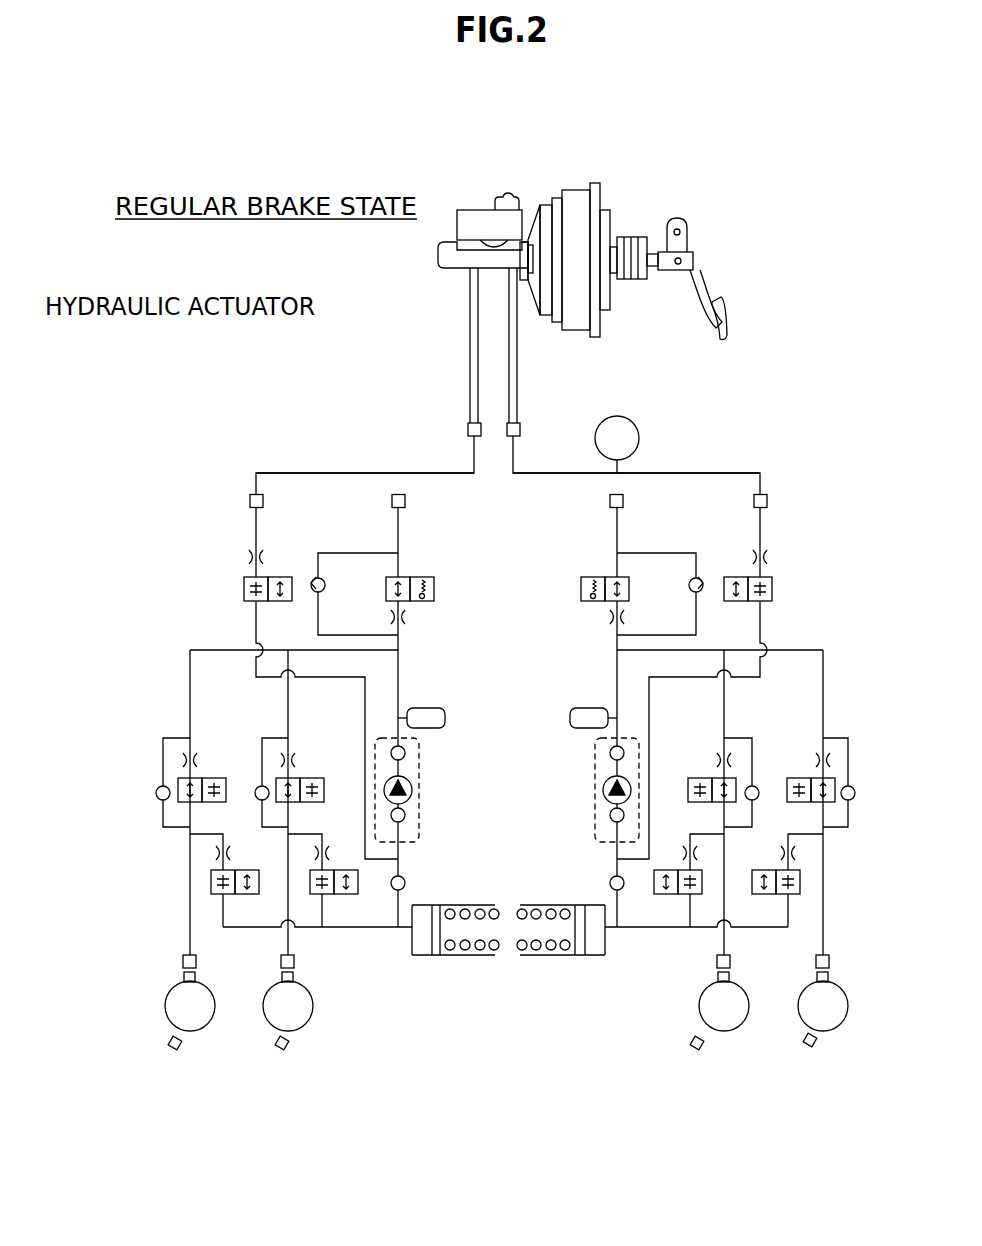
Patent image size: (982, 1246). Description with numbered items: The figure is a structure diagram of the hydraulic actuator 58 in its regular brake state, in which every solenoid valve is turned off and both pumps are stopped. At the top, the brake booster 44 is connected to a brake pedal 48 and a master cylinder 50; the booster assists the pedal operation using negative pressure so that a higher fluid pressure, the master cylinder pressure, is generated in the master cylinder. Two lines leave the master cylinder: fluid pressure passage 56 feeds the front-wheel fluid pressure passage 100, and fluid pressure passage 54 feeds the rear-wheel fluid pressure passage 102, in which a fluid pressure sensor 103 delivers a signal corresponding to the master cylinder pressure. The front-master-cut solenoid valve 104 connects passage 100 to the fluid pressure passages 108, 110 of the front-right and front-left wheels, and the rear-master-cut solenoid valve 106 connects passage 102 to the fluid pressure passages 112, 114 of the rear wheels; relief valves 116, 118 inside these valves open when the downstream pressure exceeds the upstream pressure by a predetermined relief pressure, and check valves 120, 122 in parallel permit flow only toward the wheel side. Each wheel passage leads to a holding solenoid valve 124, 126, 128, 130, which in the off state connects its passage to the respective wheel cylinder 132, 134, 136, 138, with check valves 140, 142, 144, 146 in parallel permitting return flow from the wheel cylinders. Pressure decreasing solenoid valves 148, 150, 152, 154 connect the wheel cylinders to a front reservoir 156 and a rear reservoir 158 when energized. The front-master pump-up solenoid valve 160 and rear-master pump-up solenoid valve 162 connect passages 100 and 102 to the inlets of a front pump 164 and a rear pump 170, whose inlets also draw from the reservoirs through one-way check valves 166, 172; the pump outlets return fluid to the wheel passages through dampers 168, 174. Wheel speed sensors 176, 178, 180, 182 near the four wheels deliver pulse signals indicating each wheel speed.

The brake booster 44 is at (580, 188).
The brake pedal 48 is at (722, 304).
The master cylinder 50 is at (446, 263).
The fluid pressure passage 54 is at (517, 364).
The fluid pressure passage 56 is at (470, 372).
The hydraulic actuator 58 is at (198, 388).
The front-wheel fluid pressure passage 100 is at (332, 473).
The rear-wheel fluid pressure passage 102 is at (667, 473).
The fluid pressure sensor 103 is at (640, 428).
The front-master-cut solenoid valve (SMF) 104 is at (412, 577).
The rear-master-cut solenoid valve (SMR) 106 is at (592, 577).
The fluid pressure passage 108 is at (190, 720).
The fluid pressure passage 110 is at (288, 720).
The fluid pressure passage 112 is at (724, 702).
The fluid pressure passage 114 is at (845, 676).
The relief valve 116 is at (425, 601).
The relief valve 118 is at (586, 601).
The check valve 120 is at (325, 590).
The check valve 122 is at (690, 592).
The front-right wheel holding solenoid valve (SFRH) 124 is at (205, 778).
The front-left wheel holding solenoid valve (SFLH) 126 is at (303, 778).
The rear-right wheel holding solenoid valve (SRRH) 128 is at (697, 778).
The rear-left wheel holding solenoid valve (SRLH) 130 is at (795, 778).
The wheel cylinder 132 is at (183, 975).
The wheel cylinder 134 is at (301, 975).
The wheel cylinder 136 is at (716, 962).
The wheel cylinder 138 is at (816, 975).
The check valve 140 is at (160, 800).
The check valve 142 is at (260, 800).
The check valve 144 is at (754, 800).
The check valve 146 is at (849, 800).
The front-right wheel pressure decreasing solenoid valve (SFRR) 148 is at (240, 894).
The front-left wheel pressure decreasing solenoid valve (SFLR) 150 is at (343, 894).
The rear-right wheel pressure decreasing solenoid valve (SRRR) 152 is at (668, 894).
The rear-left wheel pressure decreasing solenoid valve (SRLR) 154 is at (768, 894).
The front reservoir 156 is at (465, 955).
The rear reservoir 158 is at (545, 955).
The front-master pump-up solenoid valve (SRMF) 160 is at (244, 592).
The rear-master pump-up solenoid valve (SRMR) 162 is at (772, 588).
The front pump 164 is at (421, 800).
The check valve 166 is at (405, 882).
The damper 168 is at (445, 712).
The rear pump 170 is at (597, 786).
The check valve 172 is at (610, 883).
The damper 174 is at (570, 725).
The wheel speed sensor 176 is at (181, 1050).
The wheel speed sensor 178 is at (289, 1045).
The wheel speed sensor 180 is at (690, 1043).
The wheel speed sensor 182 is at (803, 1043).